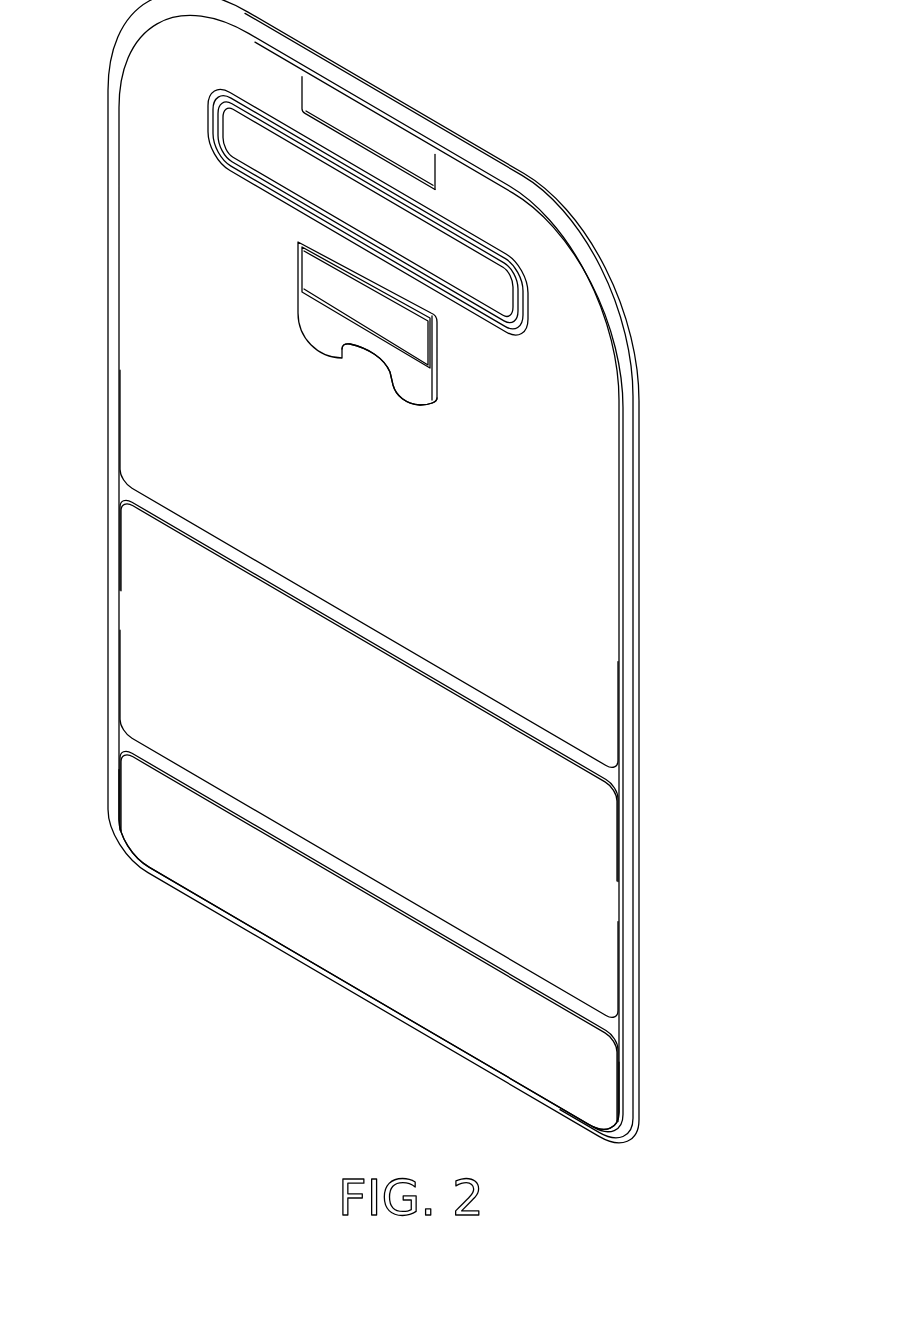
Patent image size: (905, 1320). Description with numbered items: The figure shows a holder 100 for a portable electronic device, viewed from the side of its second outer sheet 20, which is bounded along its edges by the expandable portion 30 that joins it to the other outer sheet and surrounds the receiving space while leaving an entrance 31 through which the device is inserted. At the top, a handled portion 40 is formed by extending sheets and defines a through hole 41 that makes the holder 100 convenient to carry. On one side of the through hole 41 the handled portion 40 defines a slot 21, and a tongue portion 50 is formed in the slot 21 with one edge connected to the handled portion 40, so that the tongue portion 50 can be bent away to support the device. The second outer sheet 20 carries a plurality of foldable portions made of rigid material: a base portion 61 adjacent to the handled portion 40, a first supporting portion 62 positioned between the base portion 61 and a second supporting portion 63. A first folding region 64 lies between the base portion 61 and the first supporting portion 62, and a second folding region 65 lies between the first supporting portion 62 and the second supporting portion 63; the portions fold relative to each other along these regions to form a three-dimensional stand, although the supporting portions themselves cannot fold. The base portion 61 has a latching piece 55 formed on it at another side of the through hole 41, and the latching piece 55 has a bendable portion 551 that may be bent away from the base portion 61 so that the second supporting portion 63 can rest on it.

The holder 100 is at (648, 78).
The second outer sheet 20 is at (627, 552).
The slot 21 is at (438, 170).
The expandable portion 30 is at (640, 623).
The entrance 31 is at (640, 390).
The handled portion 40 is at (550, 275).
The through hole 41 is at (476, 260).
The tongue portion 50 is at (358, 130).
The latching piece 55 is at (418, 333).
The bendable portion 551 is at (418, 390).
The base portion 61 is at (590, 648).
The first supporting portion 62 is at (580, 890).
The second supporting portion 63 is at (600, 1075).
The first folding region 64 is at (147, 507).
The second folding region 65 is at (147, 757).